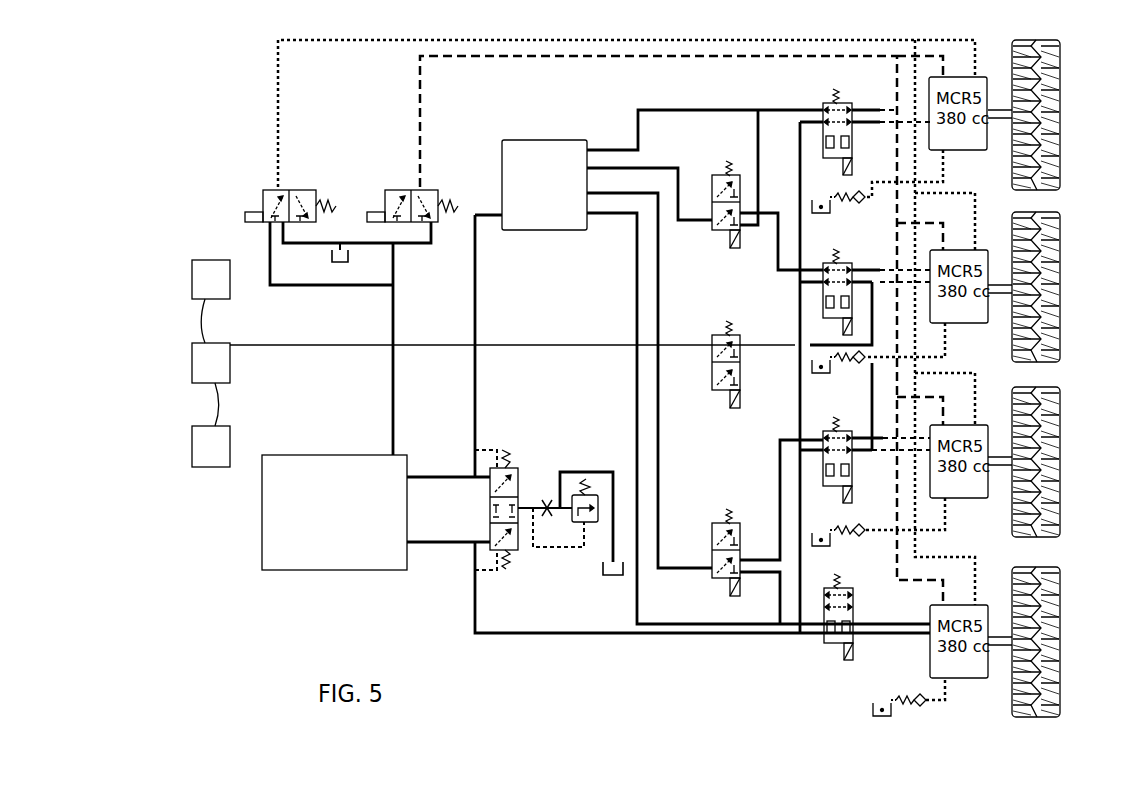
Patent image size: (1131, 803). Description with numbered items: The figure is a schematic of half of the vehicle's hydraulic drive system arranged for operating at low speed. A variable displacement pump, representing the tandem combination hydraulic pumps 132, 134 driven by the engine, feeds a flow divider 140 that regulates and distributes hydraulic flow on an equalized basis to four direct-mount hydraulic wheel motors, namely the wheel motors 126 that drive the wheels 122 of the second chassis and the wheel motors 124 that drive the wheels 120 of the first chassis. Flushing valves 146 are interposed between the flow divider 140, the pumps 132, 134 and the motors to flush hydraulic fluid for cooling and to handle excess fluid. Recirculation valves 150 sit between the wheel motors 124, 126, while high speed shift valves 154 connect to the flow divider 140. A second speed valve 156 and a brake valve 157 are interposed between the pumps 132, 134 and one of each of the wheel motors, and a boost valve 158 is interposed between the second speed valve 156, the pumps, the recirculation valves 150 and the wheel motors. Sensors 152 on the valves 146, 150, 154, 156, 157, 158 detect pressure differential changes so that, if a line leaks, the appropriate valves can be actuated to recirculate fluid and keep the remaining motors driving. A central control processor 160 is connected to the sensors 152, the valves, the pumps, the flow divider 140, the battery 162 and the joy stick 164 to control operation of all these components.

The wheels 120 is at (1050, 495).
The wheels 122 is at (1048, 128).
The wheel motor 124 is at (962, 499).
The wheel motor 126 is at (962, 151).
The hydraulic pump 132 is at (334, 503).
The hydraulic pump 134 is at (305, 455).
The flow divider 140 is at (512, 140).
The flushing valve 146 is at (508, 468).
The recirculation valve 150 is at (850, 103).
The sensor 152 is at (833, 97).
The high speed shift valve 154 is at (712, 185).
The second speed valve 156 is at (390, 190).
The brake valve 157 is at (265, 190).
The boost valve 158 is at (705, 335).
The central control processor 160 is at (211, 384).
The battery 162 is at (211, 301).
The joy stick 164 is at (211, 446).